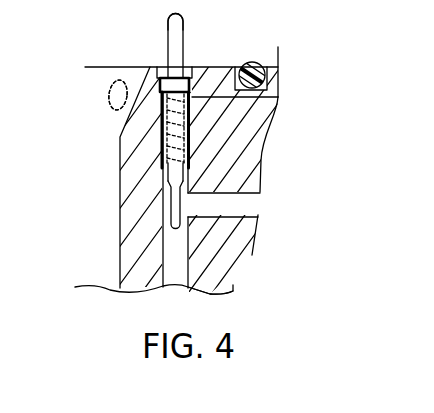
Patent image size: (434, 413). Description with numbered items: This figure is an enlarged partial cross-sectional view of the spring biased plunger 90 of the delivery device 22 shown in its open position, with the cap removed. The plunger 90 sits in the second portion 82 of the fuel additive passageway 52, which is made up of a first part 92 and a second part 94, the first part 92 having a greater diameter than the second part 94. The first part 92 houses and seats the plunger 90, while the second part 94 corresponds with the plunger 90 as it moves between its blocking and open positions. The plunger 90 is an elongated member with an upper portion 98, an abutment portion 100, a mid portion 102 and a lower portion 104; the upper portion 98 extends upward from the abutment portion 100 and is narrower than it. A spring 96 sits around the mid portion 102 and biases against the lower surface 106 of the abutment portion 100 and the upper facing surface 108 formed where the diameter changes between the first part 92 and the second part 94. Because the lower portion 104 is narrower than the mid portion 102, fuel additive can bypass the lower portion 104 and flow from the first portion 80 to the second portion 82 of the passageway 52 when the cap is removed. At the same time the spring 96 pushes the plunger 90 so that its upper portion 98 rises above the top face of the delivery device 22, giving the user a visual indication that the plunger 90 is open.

The delivery device 22 is at (104, 38).
The fuel additive passageway 52 is at (208, 247).
The first portion 80 is at (242, 200).
The second portion 82 is at (192, 272).
The spring biased plunger 90 is at (193, 38).
The first part 92 is at (195, 131).
The second part 94 is at (160, 192).
The spring 96 is at (110, 113).
The upper portion 98 is at (174, 36).
The abutment portion 100 is at (150, 88).
The mid portion 102 is at (195, 145).
The lower portion 104 is at (177, 205).
The lower surface 106 is at (277, 97).
The upper facing surface 108 is at (160, 164).